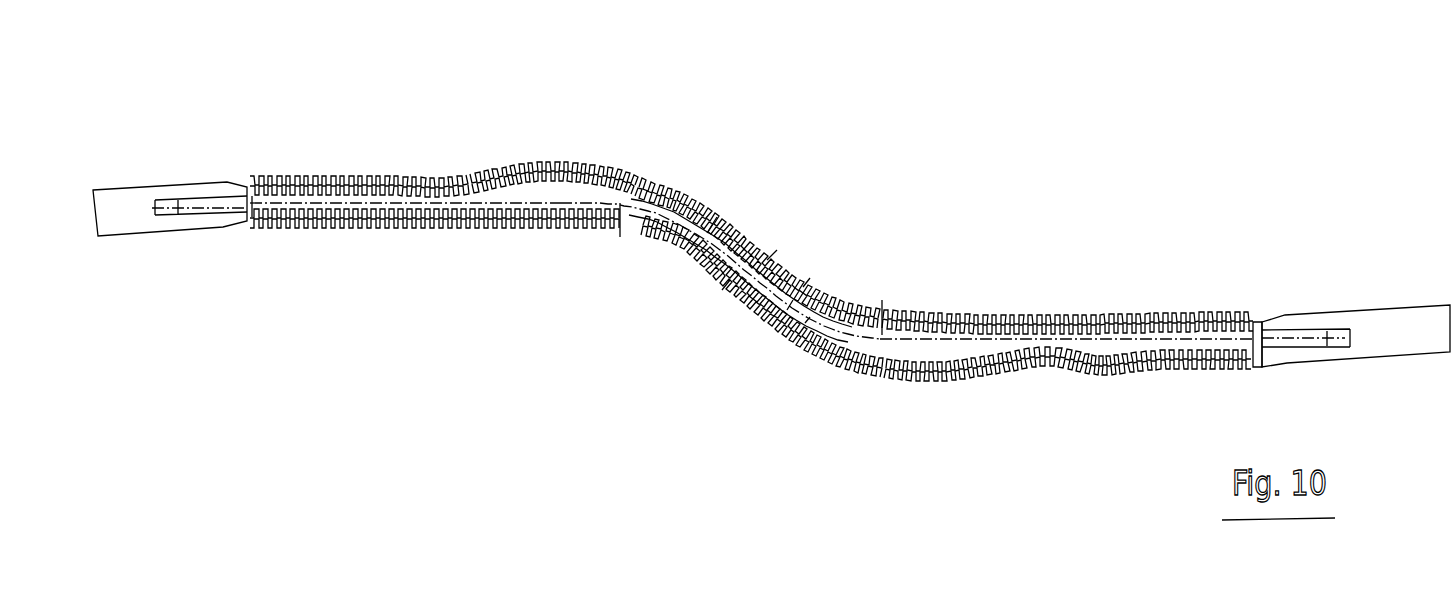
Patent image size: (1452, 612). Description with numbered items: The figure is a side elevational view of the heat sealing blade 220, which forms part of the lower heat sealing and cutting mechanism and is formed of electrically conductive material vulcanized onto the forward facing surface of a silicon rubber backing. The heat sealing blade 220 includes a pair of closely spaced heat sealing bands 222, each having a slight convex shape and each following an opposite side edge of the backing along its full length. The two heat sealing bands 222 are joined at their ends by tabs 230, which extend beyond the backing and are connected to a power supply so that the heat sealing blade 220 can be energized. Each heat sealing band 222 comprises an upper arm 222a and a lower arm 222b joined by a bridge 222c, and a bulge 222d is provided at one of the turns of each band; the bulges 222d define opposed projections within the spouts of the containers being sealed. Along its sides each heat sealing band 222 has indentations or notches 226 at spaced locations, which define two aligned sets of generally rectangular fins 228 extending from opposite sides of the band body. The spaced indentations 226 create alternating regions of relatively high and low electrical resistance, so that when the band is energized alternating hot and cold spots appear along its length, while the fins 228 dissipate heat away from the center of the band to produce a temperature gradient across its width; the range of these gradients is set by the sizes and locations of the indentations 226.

The heat sealing blade 220 is at (1127, 110).
The heat sealing band 222 is at (858, 295).
The upper arm 222a is at (457, 140).
The lower arm 222b is at (1113, 322).
The bridge 222c is at (775, 260).
The bulge 222d is at (596, 162).
The indentation 226 is at (485, 228).
The fin 228 is at (1030, 315).
The tab 230 is at (141, 235).